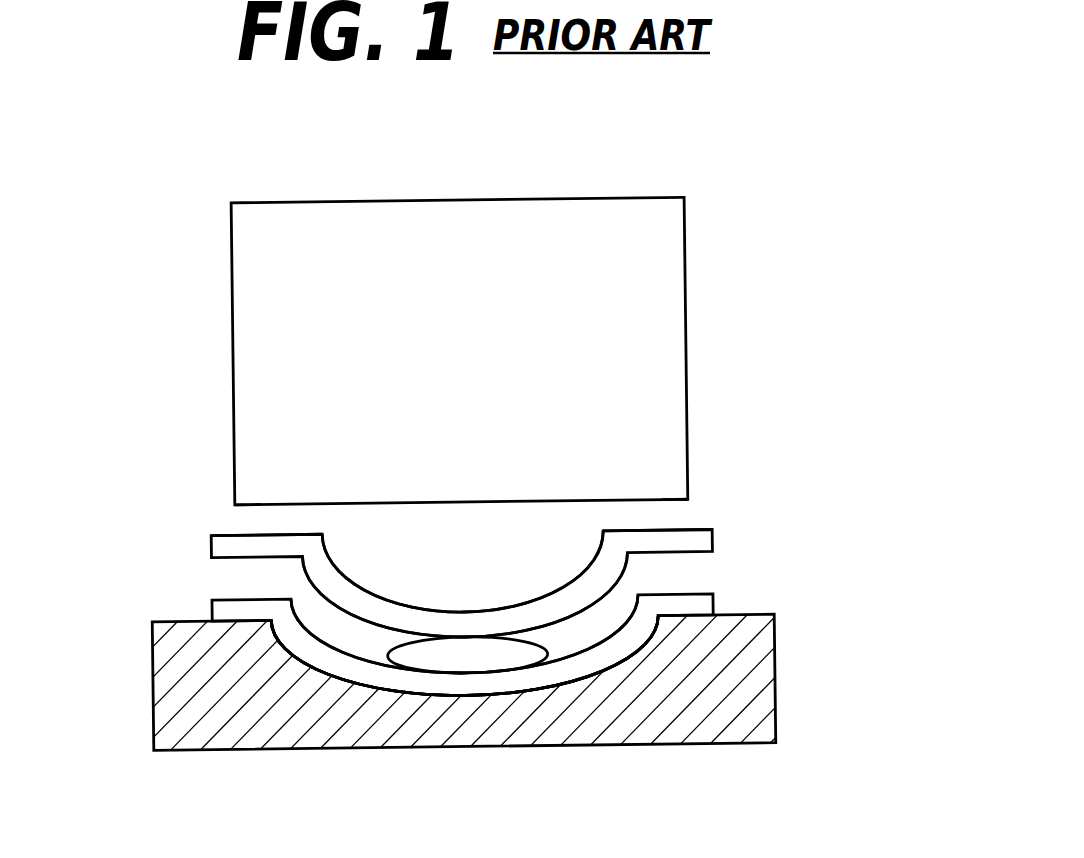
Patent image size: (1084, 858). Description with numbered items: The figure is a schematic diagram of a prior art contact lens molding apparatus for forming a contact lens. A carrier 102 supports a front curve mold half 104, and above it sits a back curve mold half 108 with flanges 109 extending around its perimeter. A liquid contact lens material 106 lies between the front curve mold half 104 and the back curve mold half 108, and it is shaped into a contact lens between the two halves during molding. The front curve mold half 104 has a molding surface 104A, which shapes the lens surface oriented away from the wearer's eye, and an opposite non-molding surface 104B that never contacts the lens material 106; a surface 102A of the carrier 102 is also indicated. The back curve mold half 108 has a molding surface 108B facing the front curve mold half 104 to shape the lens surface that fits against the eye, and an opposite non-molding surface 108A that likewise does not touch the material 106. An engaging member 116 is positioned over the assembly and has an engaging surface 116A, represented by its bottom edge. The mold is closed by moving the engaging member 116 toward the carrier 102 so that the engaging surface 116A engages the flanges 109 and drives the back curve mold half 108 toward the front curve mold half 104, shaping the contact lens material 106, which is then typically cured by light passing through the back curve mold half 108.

The carrier 102 is at (777, 688).
The cavity surface of substrate 102A is at (450, 698).
The front curve mold half 104 is at (735, 602).
The molding surface 104A is at (580, 652).
The non-molding surface 104B is at (570, 687).
The liquid contact lens material 106 is at (427, 660).
The back curve mold half 108 is at (735, 545).
The non-molding surface 108A is at (396, 606).
The molding surface 108B is at (530, 628).
The flanges 109 is at (227, 533).
The engaging member 116 is at (687, 331).
The engaging surface 116A is at (258, 510).